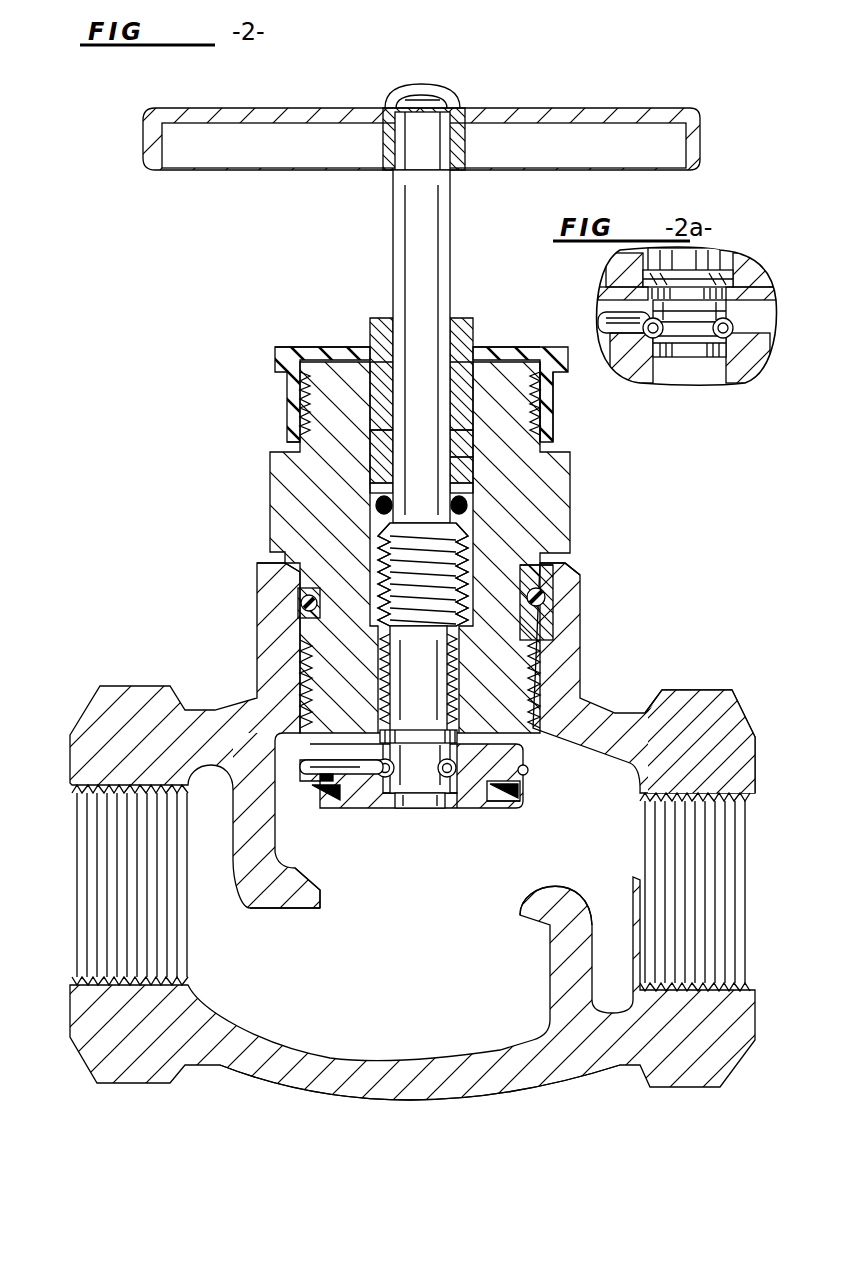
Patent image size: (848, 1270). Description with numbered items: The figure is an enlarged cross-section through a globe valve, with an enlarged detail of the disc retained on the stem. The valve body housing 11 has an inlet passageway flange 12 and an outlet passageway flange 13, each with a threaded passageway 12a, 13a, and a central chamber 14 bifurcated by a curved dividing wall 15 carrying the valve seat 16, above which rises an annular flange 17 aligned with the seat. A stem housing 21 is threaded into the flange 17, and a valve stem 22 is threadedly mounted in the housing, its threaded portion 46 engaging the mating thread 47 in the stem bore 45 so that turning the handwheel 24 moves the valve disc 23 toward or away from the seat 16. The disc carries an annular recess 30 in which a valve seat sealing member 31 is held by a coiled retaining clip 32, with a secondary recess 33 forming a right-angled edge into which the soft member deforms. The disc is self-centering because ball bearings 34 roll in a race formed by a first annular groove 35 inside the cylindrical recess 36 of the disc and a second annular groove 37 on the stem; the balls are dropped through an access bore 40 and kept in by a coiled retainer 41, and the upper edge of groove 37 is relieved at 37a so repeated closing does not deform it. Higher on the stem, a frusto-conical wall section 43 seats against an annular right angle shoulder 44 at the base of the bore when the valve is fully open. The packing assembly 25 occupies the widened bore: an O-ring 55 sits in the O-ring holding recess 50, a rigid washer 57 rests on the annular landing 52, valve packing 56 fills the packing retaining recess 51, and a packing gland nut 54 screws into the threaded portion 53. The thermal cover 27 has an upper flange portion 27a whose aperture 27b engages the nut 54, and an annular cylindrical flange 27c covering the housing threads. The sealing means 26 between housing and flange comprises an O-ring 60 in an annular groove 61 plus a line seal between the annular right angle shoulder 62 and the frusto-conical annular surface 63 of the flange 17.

In FIG. 2, the valve body housing 11 is at (610, 708).
In FIG. 2, the inlet passageway flange 12 is at (85, 752).
In FIG. 2, the threaded passageway 12a is at (80, 870).
In FIG. 2, the outlet passageway flange 13 is at (745, 722).
In FIG. 2, the threaded passageway 13a is at (748, 800).
In FIG. 2, the central chamber 14 is at (410, 1093).
In FIG. 2, the curved dividing wall 15 is at (545, 882).
In FIG. 2, the valve seat 16 is at (322, 895).
In FIG. 2, the annular flange 17 is at (565, 640).
In FIG. 2, the stem housing 21 is at (555, 522).
In FIG. 2, the valve stem 22 is at (458, 260).
In FIG. 2A, the valve stem 22 is at (656, 256).
In FIG. 2, the valve disc 23 is at (530, 746).
In FIG. 2, the handwheel 24 is at (540, 110).
In FIG. 2, the valve packing assembly 25 is at (492, 412).
In FIG. 2, the sealing means 26 is at (582, 570).
In FIG. 2, the thermal barrier and thread cover 27 is at (545, 356).
In FIG. 2, the upper flange portion 27a is at (505, 335).
In FIG. 2, the aperture 27b is at (385, 350).
In FIG. 2, the annular cylindrical flange 27c is at (550, 400).
In FIG. 2, the annular recess 30 is at (470, 800).
In FIG. 2, the valve seat sealing member 31 is at (500, 806).
In FIG. 2, the coiled retaining clip 32 is at (503, 808).
In FIG. 2, the secondary recess 33 is at (515, 790).
In FIG. 2, the ball bearings 34 is at (447, 778).
In FIG. 2A, the ball bearings 34 is at (732, 334).
In FIG. 2, the first annular groove 35 is at (446, 750).
In FIG. 2A, the first annular groove 35 is at (735, 330).
In FIG. 2, the cylindrical recess 36 is at (415, 795).
In FIG. 2, the second annular groove 37 is at (428, 760).
In FIG. 2A, the second annular groove 37 is at (688, 358).
In FIG. 2A, the relieved upper edge 37a is at (722, 320).
In FIG. 2, the access bore 40 is at (320, 762).
In FIG. 2A, the access bore 40 is at (612, 302).
In FIG. 2, the coiled retainer 41 is at (318, 788).
In FIG. 2A, the coiled retainer 41 is at (612, 324).
In FIG. 2A, the frusto-conical wall section 43 is at (722, 282).
In FIG. 2, the annular right angle shoulder 44 is at (380, 713).
In FIG. 2, the stem bore 45 is at (385, 548).
In FIG. 2, the threaded portion 46 is at (462, 550).
In FIG. 2, the mating thread 47 is at (383, 665).
In FIG. 2, the O-ring holding recess 50 is at (380, 505).
In FIG. 2, the packing retaining recess 51 is at (375, 470).
In FIG. 2, the annular landing 52 is at (465, 494).
In FIG. 2, the threaded portion 53 is at (372, 382).
In FIG. 2, the packing gland nut 54 is at (452, 332).
In FIG. 2, the O-ring 55 is at (466, 506).
In FIG. 2, the valve packing 56 is at (470, 452).
In FIG. 2, the rigid washer 57 is at (465, 478).
In FIG. 2, the O-ring 60 is at (547, 610).
In FIG. 2, the annular groove 61 is at (515, 605).
In FIG. 2, the annular right angle shoulder 62 is at (546, 562).
In FIG. 2, the frusto-conical annular surface 63 is at (545, 594).